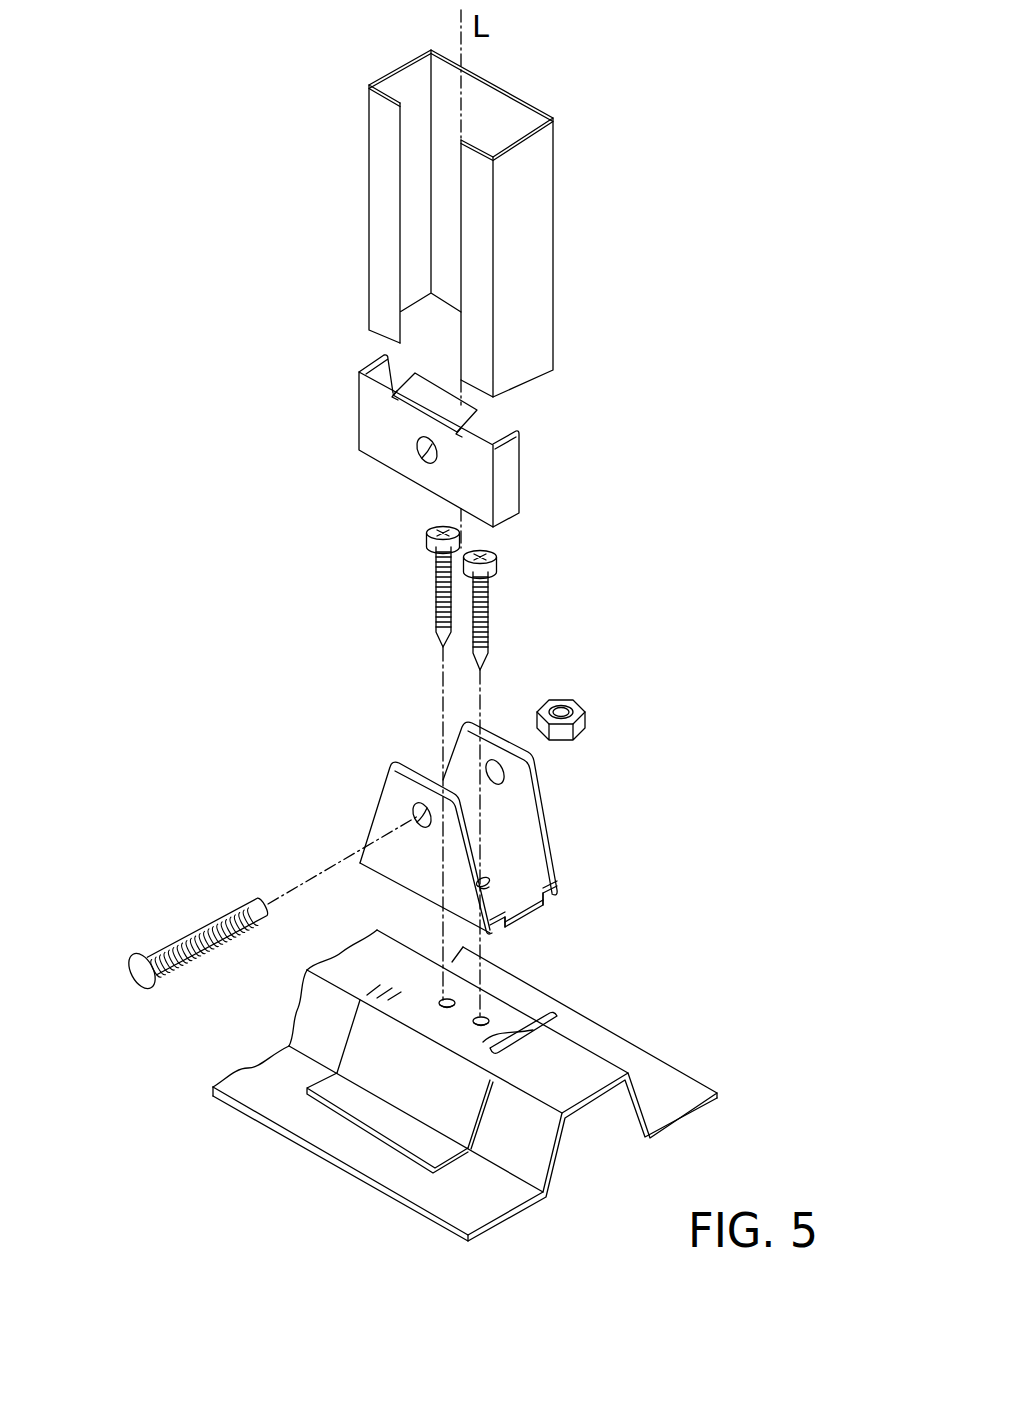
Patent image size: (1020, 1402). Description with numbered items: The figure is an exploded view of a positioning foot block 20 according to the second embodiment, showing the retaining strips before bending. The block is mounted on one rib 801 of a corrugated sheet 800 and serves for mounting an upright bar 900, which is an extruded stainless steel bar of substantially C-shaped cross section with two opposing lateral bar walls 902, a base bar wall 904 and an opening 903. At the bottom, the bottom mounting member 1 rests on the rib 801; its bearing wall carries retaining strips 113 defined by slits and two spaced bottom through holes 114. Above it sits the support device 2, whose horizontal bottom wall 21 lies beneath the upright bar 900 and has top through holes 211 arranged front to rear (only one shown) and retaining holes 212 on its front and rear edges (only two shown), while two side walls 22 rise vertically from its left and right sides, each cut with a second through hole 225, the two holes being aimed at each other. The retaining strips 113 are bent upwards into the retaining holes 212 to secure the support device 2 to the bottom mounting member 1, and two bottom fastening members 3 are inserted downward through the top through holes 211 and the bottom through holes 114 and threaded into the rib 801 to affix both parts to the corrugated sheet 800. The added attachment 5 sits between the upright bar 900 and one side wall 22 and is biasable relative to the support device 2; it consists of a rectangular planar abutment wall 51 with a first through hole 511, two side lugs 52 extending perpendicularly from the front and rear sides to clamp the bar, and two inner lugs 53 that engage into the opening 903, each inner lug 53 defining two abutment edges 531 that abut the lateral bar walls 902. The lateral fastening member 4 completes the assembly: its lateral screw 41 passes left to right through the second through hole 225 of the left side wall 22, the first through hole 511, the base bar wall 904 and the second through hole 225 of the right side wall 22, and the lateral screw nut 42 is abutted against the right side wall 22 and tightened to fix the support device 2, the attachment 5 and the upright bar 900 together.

The bottom mounting member 1 is at (420, 1066).
The retaining strips 113 is at (531, 1032).
The bottom through holes 114 is at (480, 1020).
The support device 2 is at (481, 814).
The bottom wall 21 is at (565, 882).
The top through holes 211 is at (486, 882).
The retaining holes 212 is at (517, 905).
The side walls 22 is at (486, 808).
The second through hole 225 is at (508, 772).
The bottom fastening members 3 is at (472, 638).
The lateral fastening member 4 is at (270, 904).
The lateral screw 41 is at (193, 930).
The lateral screw nut 42 is at (568, 698).
The attachment 5 is at (430, 417).
The abutment wall 51 is at (394, 457).
The first through hole 511 is at (428, 456).
The side lugs 52 is at (372, 361).
The inner lugs 53 is at (451, 368).
The abutment edges 531 is at (393, 395).
The positioning foot block 20 is at (626, 441).
The corrugated sheet 800 is at (515, 1085).
The rib 801 is at (650, 1105).
The upright bar 900 is at (474, 210).
The lateral bar walls 902 is at (368, 160).
The opening 903 is at (417, 140).
The base bar wall 904 is at (512, 128).